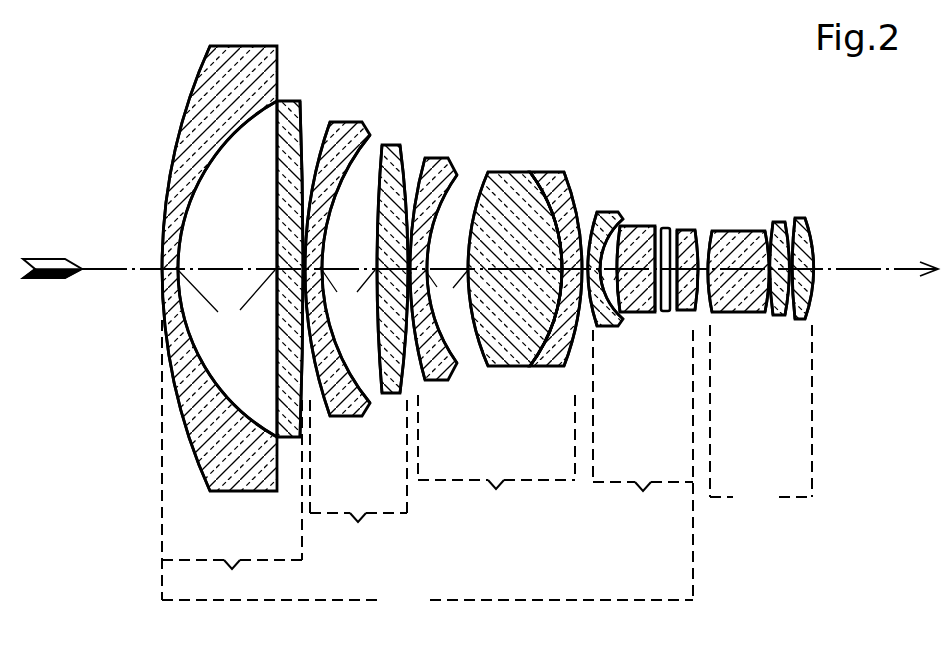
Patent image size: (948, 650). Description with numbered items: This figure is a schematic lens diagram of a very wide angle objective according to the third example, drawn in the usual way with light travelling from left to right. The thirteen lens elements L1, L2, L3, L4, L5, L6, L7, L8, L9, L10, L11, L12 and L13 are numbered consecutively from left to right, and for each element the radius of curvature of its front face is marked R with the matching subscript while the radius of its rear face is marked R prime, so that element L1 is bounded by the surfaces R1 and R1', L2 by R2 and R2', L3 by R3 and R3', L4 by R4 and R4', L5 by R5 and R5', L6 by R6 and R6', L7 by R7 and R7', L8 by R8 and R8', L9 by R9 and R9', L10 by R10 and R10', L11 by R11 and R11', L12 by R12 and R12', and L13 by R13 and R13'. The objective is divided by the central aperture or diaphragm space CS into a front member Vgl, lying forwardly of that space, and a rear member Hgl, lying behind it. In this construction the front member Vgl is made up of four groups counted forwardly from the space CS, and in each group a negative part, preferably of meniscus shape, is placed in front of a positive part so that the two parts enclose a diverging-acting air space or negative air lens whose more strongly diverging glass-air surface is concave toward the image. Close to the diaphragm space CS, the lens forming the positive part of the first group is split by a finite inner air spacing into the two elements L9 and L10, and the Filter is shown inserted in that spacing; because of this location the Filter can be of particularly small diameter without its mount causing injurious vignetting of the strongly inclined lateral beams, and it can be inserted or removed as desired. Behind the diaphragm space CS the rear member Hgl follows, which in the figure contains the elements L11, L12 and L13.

The first lens element L1 is at (230, 467).
The second lens element L2 is at (292, 427).
The third lens element L3 is at (345, 413).
The fourth lens element L4 is at (387, 327).
The fifth lens element L5 is at (440, 382).
The sixth lens element L6 is at (511, 367).
The seventh lens element L7 is at (555, 367).
The eighth lens element L8 is at (607, 327).
The ninth lens element L9 is at (641, 313).
The tenth lens element L10 is at (690, 313).
The eleventh lens element L11 is at (725, 312).
The twelfth lens element L12 is at (777, 315).
The thirteenth lens element L13 is at (795, 320).
The front face radius of first lens element R1 is at (170, 268).
The rear face radius of first lens element R1' is at (227, 269).
The front face radius of second lens element R2 is at (257, 269).
The rear face radius of second lens element R2' is at (311, 238).
The front face radius of third lens element R3 is at (332, 241).
The rear face radius of third lens element R3' is at (346, 269).
The front face radius of fourth lens element R4 is at (384, 238).
The rear face radius of fourth lens element R4' is at (396, 217).
The front face radius of fifth lens element R5 is at (428, 226).
The rear face radius of fifth lens element R5' is at (449, 240).
The front face radius of sixth lens element R6 is at (487, 230).
The rear face radius of sixth lens element R6' is at (532, 212).
The front face radius of seventh lens element R7 is at (546, 236).
The rear face radius of seventh lens element R7' is at (566, 216).
The front face radius of eighth lens element R8 is at (600, 230).
The rear face radius of eighth lens element R8' is at (618, 210).
The front face radius of ninth lens element R9 is at (635, 237).
The rear face radius of ninth lens element R9' is at (664, 223).
The front face radius of tenth lens element R10 is at (703, 232).
The rear face radius of tenth lens element R10' is at (722, 249).
The front face radius of eleventh lens element R11 is at (743, 230).
The rear face radius of eleventh lens element R11' is at (796, 229).
The front face radius of twelfth lens element R12 is at (819, 222).
The rear face radius of twelfth lens element R12' is at (837, 241).
The front face radius of thirteenth lens element R13 is at (840, 260).
The rear face radius of thirteenth lens element R13' is at (847, 268).
The filter Filter is at (700, 225).
The central aperture space CS is at (698, 353).
The rear member Hgl is at (761, 419).
The front member Vgl is at (427, 601).